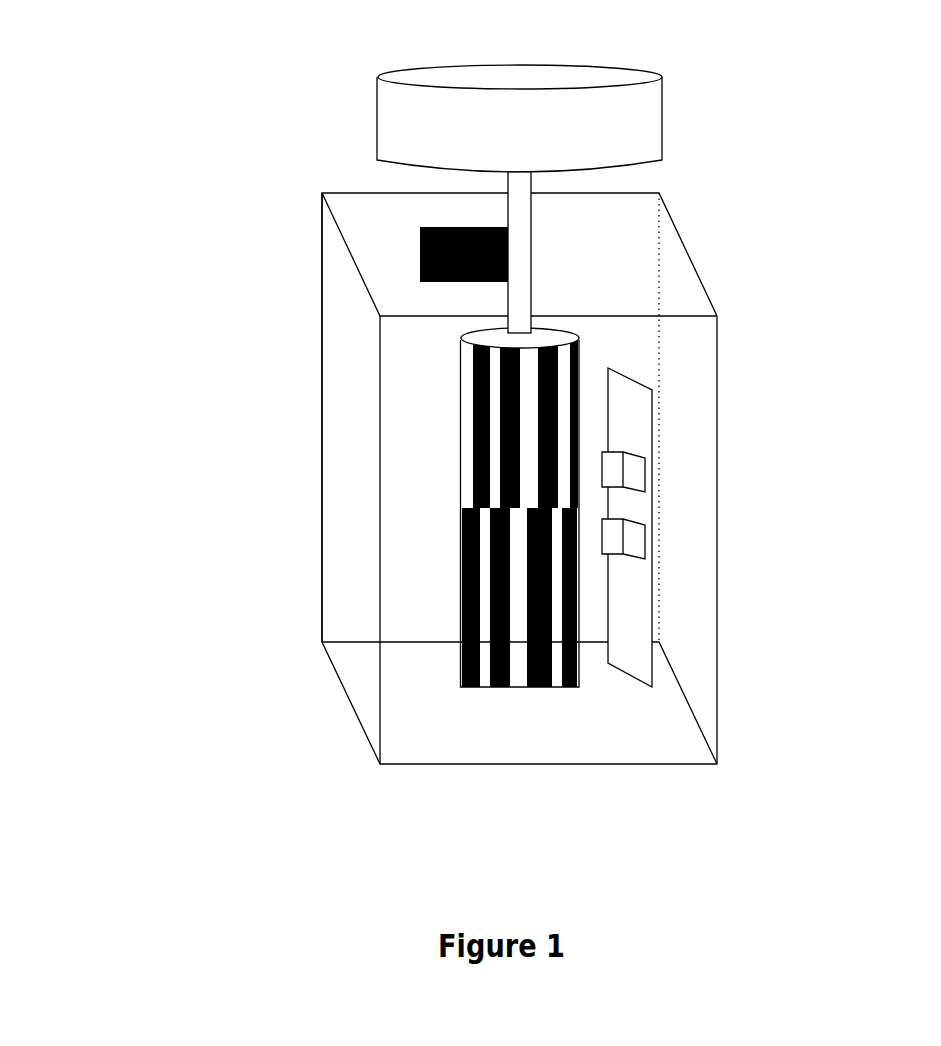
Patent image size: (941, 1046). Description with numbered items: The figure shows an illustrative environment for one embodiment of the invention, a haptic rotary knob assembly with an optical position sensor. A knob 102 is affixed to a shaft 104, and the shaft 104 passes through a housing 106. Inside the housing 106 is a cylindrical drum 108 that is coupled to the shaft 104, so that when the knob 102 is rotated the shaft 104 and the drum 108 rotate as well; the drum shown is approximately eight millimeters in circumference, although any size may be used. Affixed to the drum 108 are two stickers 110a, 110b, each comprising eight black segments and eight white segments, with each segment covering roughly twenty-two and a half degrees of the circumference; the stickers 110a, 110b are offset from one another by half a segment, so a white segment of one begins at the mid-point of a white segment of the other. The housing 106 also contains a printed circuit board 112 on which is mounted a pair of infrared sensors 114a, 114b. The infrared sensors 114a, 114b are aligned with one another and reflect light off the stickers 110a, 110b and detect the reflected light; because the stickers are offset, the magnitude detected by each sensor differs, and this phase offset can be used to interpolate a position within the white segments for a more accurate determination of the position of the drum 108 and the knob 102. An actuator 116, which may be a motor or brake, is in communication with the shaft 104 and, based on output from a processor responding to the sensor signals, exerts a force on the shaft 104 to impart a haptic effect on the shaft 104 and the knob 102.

The knob 102 is at (662, 125).
The shaft 104 is at (531, 250).
The housing 106 is at (717, 345).
The cylindrical drum 108 is at (460, 333).
The sticker 110a is at (461, 432).
The sticker 110b is at (461, 553).
The printed circuit board 112 is at (652, 409).
The infrared sensor 114a is at (647, 477).
The infrared sensor 114b is at (647, 542).
The actuator 116 is at (420, 248).